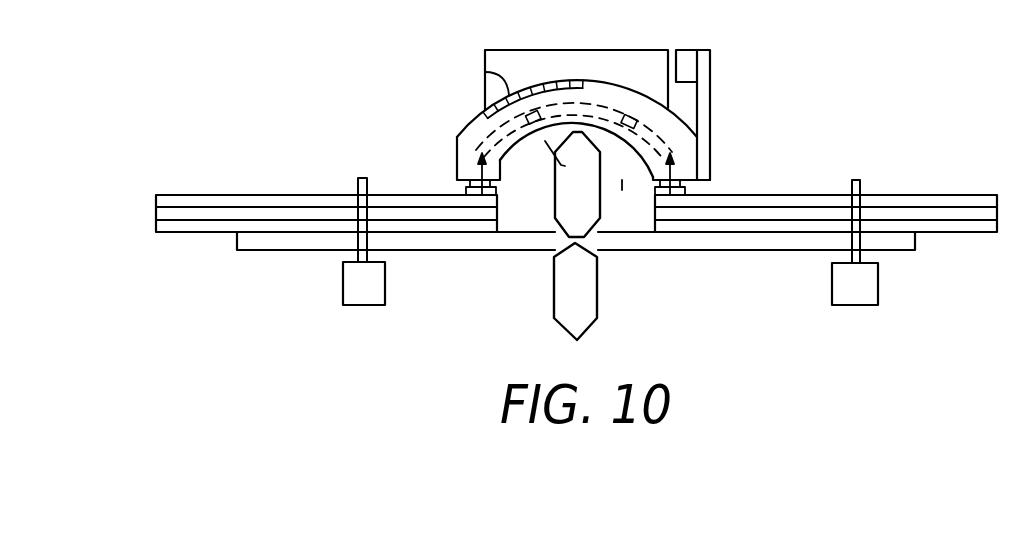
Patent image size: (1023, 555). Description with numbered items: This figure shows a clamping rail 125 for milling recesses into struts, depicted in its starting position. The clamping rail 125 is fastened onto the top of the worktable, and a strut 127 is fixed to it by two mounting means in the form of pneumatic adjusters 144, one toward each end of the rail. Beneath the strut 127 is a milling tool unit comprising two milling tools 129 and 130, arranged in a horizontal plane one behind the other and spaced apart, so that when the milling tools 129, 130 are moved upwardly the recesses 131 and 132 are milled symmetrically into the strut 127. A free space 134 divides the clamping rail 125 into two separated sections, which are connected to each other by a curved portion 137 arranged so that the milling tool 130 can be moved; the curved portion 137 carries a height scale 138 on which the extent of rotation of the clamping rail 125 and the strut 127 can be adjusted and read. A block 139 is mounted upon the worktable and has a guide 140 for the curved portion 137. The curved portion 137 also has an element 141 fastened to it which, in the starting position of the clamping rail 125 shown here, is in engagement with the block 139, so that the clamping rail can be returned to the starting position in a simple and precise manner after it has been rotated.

The clamping rail 125 is at (324, 197).
The strut 127 is at (282, 237).
The milling tool 129 is at (457, 141).
The milling tool 130 is at (584, 305).
The recess 131 is at (568, 255).
The recess 132 is at (558, 232).
The free space 134 is at (622, 180).
The curved portion 137 is at (687, 157).
The height scale 138 is at (485, 72).
The block 139 is at (555, 65).
The guide 140 is at (604, 110).
The fastening element 141 is at (713, 72).
The pneumatic adjuster 144 is at (368, 278).